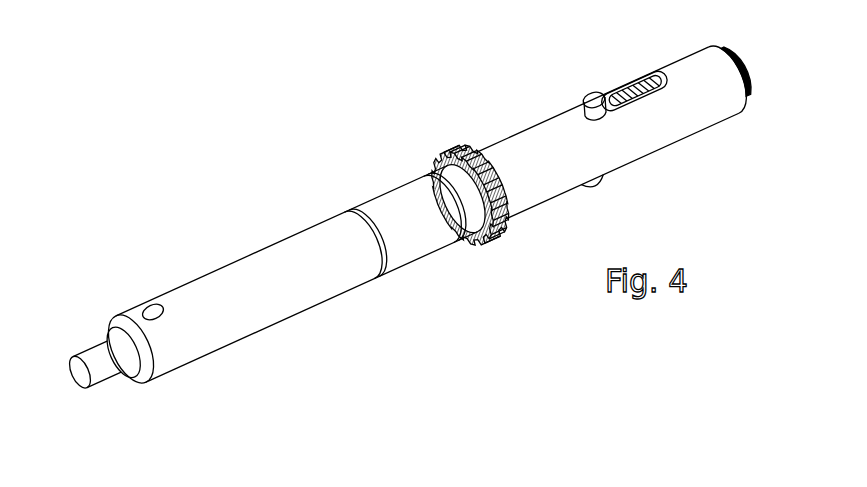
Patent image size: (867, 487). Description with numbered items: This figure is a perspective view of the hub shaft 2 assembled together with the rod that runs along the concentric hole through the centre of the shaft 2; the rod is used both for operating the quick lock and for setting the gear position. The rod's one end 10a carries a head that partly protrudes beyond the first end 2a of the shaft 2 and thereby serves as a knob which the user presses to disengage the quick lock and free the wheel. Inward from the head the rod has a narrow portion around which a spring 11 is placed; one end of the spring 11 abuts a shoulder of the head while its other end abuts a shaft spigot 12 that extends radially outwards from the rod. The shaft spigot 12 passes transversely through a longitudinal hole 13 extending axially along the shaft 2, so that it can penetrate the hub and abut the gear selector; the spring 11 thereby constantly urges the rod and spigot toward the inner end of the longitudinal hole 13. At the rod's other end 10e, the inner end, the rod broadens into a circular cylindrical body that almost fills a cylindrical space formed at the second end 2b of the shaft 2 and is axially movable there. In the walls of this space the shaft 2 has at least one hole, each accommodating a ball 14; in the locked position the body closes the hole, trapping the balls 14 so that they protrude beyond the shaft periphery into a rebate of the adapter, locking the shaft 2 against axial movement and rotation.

The shaft 2 is at (268, 240).
The first end of the shaft 2a is at (748, 94).
The second end of the shaft 2b is at (117, 320).
The one end of the rod 10a is at (753, 67).
The other end of the rod 10e is at (80, 388).
The spring 11 is at (643, 102).
The shaft spigot 12 is at (595, 93).
The longitudinal hole 13 is at (621, 82).
The ball 14 is at (160, 304).